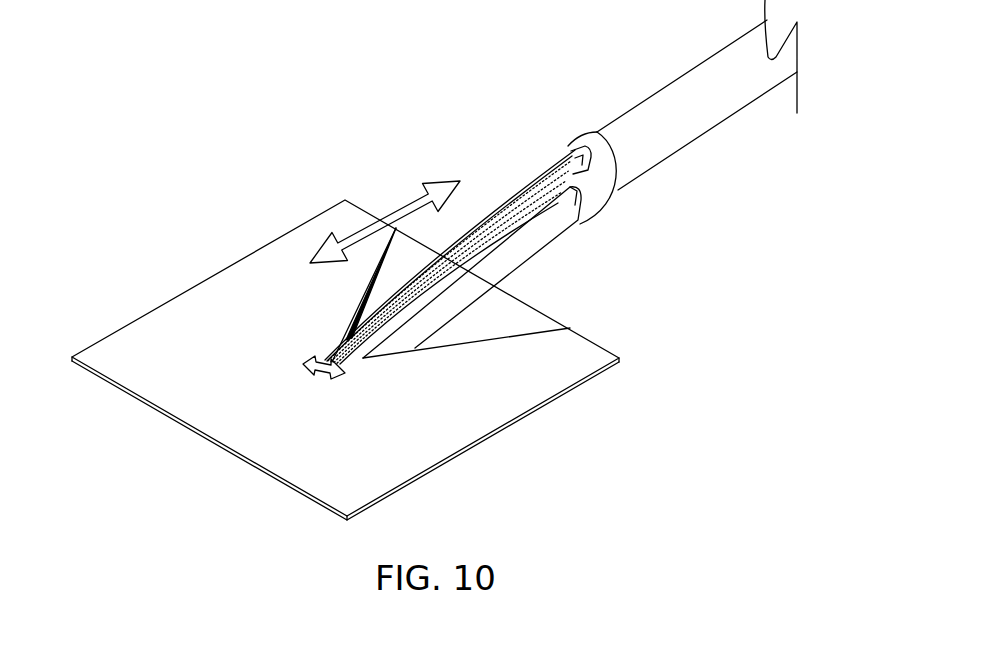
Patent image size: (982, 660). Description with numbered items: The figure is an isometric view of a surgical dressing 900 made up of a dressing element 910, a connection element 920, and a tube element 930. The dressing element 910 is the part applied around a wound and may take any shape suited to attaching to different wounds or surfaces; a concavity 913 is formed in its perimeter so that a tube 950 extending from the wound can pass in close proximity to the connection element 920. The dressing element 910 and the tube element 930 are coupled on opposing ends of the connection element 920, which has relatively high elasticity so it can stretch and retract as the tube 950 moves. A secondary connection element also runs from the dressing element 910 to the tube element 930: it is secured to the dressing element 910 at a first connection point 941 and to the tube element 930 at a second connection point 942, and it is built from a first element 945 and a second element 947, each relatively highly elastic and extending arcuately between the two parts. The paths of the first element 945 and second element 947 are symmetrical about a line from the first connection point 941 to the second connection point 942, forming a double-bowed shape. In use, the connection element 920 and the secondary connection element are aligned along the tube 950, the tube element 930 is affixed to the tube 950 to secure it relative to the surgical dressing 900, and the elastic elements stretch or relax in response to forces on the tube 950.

The surgical dressing 900 is at (307, 72).
The dressing element 910 is at (290, 250).
The concavity 913 is at (443, 335).
The connection element 920 is at (382, 332).
The tube element 930 is at (592, 190).
The first connection point 941 is at (317, 367).
The second connection point 942 is at (590, 165).
The first element 945 is at (343, 335).
The second element 947 is at (510, 212).
The tube 950 is at (642, 145).